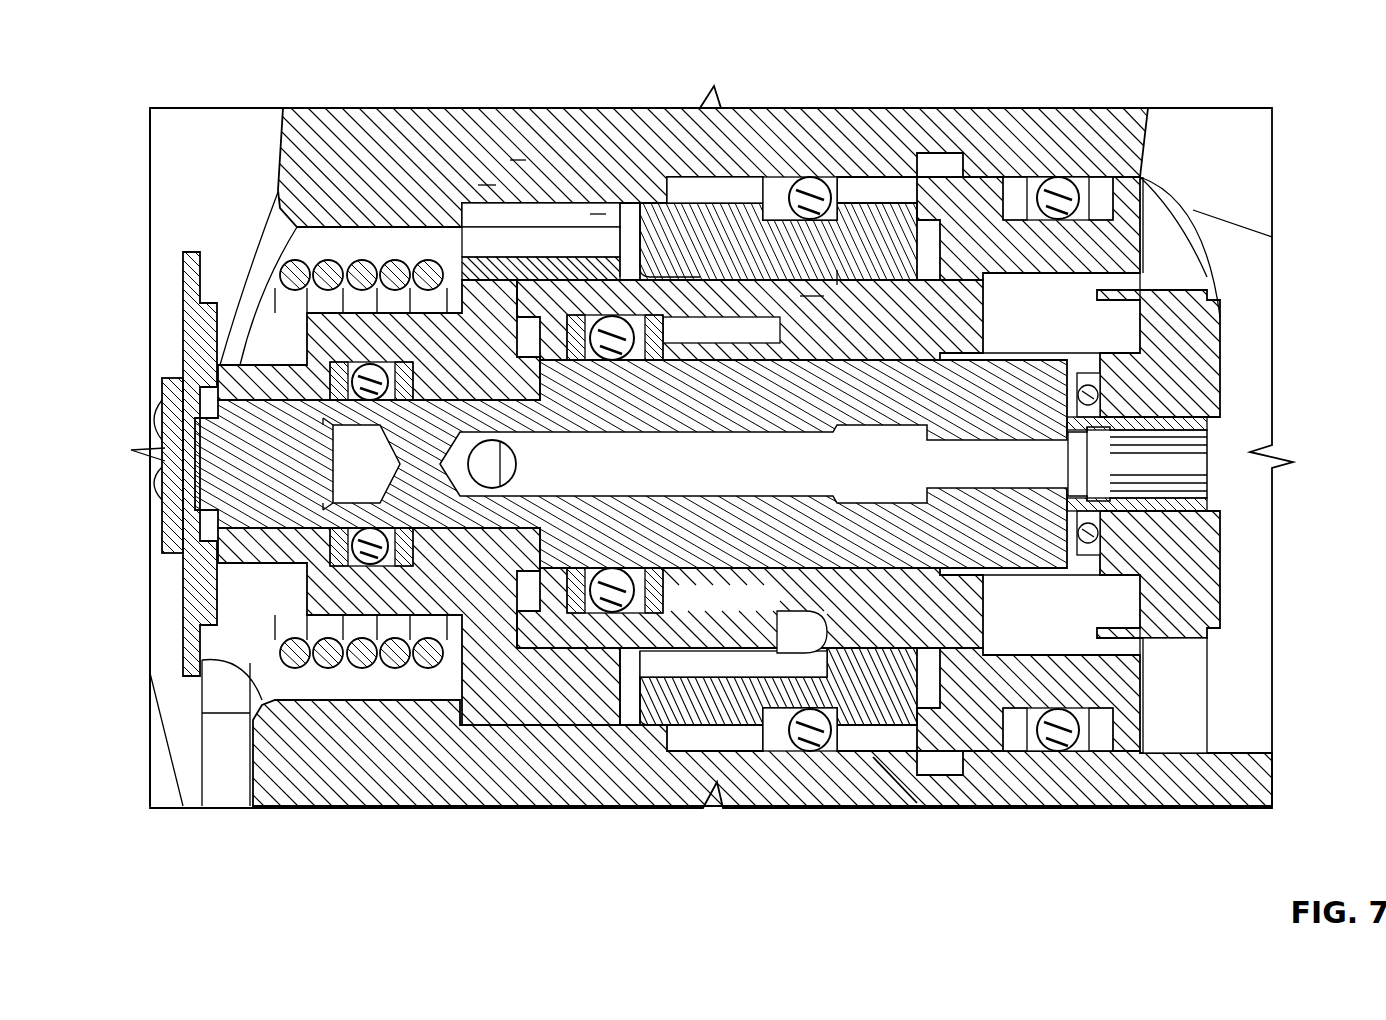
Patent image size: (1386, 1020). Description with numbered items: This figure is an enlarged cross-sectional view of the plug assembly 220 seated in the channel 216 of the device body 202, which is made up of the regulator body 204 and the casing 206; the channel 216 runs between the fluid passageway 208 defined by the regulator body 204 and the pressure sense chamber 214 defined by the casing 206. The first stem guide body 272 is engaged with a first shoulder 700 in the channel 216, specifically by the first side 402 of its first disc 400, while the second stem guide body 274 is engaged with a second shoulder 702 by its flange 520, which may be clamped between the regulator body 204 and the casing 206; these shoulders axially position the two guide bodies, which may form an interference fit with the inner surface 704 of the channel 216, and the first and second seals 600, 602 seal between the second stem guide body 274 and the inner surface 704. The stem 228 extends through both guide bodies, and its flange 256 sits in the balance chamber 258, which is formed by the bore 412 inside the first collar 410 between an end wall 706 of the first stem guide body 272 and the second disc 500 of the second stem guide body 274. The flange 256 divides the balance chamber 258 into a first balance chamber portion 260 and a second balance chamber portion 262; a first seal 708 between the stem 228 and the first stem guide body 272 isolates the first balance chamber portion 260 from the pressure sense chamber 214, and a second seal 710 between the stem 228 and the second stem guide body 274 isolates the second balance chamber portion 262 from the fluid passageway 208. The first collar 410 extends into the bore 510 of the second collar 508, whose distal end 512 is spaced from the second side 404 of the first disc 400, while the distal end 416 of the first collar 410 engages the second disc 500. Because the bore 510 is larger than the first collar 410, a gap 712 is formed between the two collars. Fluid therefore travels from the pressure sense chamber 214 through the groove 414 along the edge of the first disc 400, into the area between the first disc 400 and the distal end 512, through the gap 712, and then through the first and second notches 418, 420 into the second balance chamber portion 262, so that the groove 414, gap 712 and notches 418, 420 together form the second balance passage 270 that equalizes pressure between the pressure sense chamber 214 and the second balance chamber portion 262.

The device body 202 is at (327, 125).
The regulator body 204 is at (1173, 777).
The casing 206 is at (822, 783).
The fluid passageway 208 is at (1278, 571).
The pressure sense chamber 214 is at (199, 189).
The channel 216 is at (473, 217).
The plug assembly 220 is at (518, 163).
The stem 228 is at (957, 390).
The flange 256 is at (690, 593).
The balance chamber 258 is at (812, 299).
The first balance chamber portion 260 is at (532, 285).
The second balance chamber portion 262 is at (837, 277).
The second balance passage 270 is at (560, 270).
The first stem guide body 272 is at (527, 717).
The second stem guide body 274 is at (865, 703).
The first disc 400 is at (497, 703).
The first side 402 is at (460, 683).
The second side 404 is at (617, 677).
The first collar 410 is at (683, 250).
The bore 412 is at (810, 317).
The groove 414 is at (487, 187).
The distal end 416 is at (1037, 176).
The first notch 418 is at (834, 292).
The second notch 420 is at (833, 630).
The second disc 500 is at (987, 232).
The second collar 508 is at (742, 303).
The bore 510 is at (768, 303).
The distal end 512 is at (598, 217).
The flange 520 is at (925, 775).
The first seal 600 is at (808, 742).
The second seal 602 is at (1068, 732).
The first shoulder 700 is at (460, 713).
The second shoulder 702 is at (945, 752).
The inner surface 704 is at (345, 680).
The end wall 706 is at (517, 343).
The first seal 708 is at (365, 633).
The second seal 710 is at (963, 700).
The gap 712 is at (742, 250).